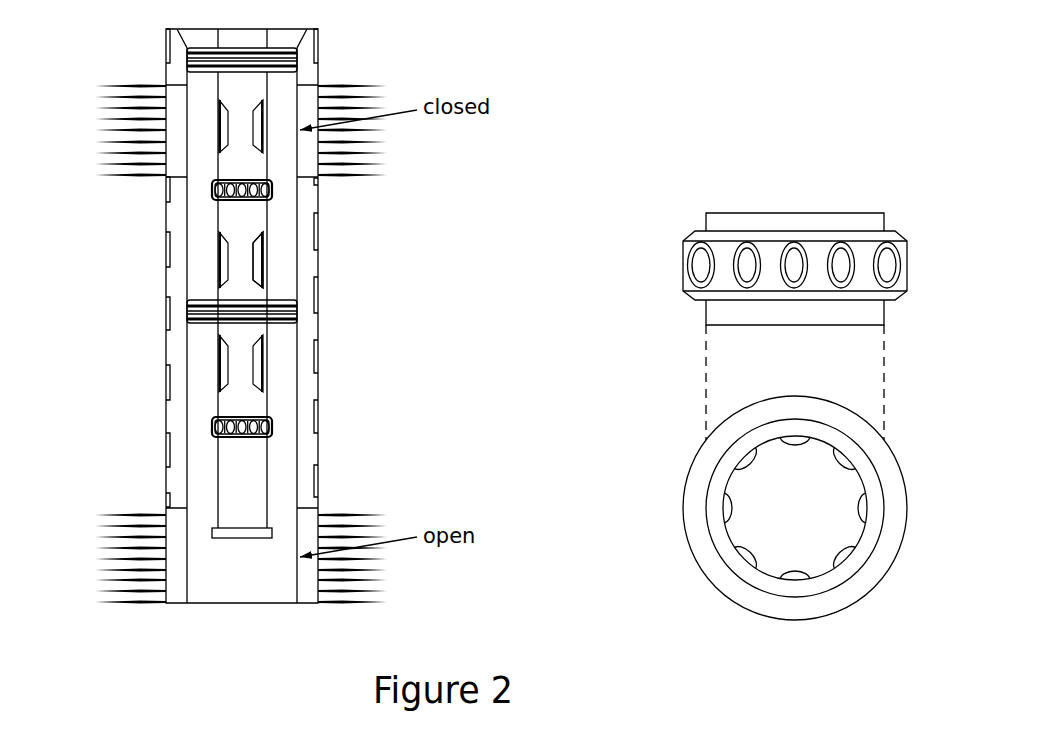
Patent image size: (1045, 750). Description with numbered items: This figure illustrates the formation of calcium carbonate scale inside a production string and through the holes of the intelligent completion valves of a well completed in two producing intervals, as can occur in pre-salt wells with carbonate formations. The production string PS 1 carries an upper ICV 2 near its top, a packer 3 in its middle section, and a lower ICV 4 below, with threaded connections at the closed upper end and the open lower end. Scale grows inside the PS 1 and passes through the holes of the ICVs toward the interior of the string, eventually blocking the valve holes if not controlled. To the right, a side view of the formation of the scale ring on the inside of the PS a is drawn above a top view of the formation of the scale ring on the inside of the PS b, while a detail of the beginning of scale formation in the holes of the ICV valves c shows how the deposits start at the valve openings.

The production string 1 is at (237, 82).
The upper ICV 2 is at (212, 189).
The packer 3 is at (187, 313).
The lower ICV 4 is at (212, 428).
The side view of the formation of the scale ring a is at (259, 262).
The top view of the formation of the scale ring b is at (711, 543).
The detail of the beginning of scale formation in the holes of the ICVs c is at (700, 262).